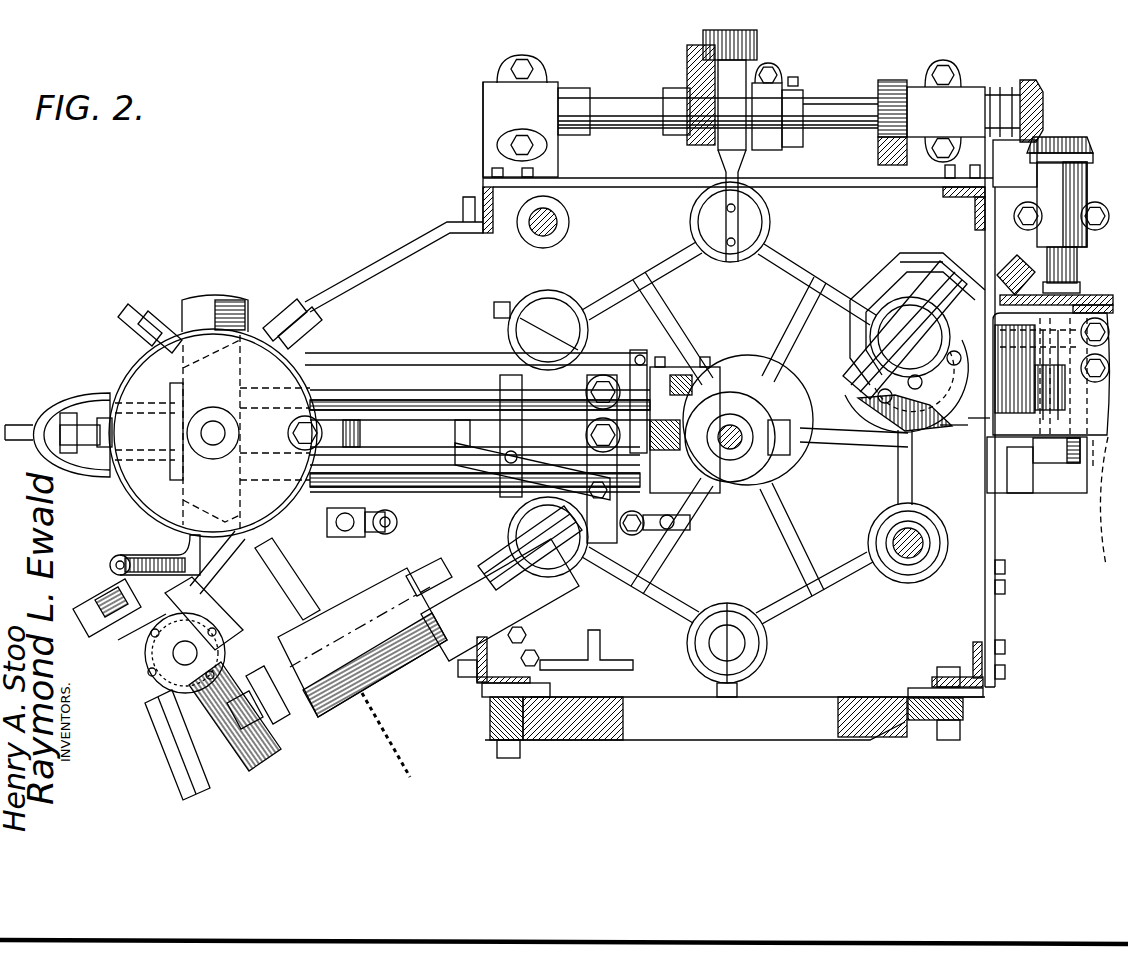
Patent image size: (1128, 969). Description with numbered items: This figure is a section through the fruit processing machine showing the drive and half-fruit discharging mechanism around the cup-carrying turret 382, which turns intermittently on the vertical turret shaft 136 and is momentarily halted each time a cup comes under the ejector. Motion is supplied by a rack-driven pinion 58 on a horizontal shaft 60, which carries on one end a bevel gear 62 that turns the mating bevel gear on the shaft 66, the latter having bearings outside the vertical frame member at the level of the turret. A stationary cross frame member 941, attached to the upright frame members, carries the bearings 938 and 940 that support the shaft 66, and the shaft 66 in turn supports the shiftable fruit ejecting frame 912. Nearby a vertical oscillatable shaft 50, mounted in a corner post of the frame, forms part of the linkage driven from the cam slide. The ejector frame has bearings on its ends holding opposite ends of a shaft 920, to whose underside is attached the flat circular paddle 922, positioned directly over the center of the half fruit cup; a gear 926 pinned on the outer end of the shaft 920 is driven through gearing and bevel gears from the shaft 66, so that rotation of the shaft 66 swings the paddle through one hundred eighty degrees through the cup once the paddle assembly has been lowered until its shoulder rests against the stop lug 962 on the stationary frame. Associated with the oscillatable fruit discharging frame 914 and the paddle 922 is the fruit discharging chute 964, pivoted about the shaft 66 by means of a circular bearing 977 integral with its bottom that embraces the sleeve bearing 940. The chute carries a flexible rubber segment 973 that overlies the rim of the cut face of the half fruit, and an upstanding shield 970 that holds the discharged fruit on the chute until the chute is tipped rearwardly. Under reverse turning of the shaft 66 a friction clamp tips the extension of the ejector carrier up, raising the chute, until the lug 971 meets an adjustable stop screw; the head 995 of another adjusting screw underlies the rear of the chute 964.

The vertical oscillatable shaft 50 is at (553, 222).
The pinion 58 is at (893, 84).
The horizontal shaft 60 is at (628, 105).
The bevel gear 62 is at (1040, 84).
The shaft 66 is at (1068, 266).
The turret shaft 136 is at (732, 430).
The cup-carrying turret 382 is at (826, 616).
The half fruit ejector 912 is at (876, 276).
The oscillatable fruit discharging frame 914 is at (908, 256).
The shaft 920 is at (945, 264).
The paddle 922 is at (900, 327).
The gear 926 is at (1017, 264).
The bearing 938 is at (1052, 200).
The bearing 940 is at (1040, 465).
The stationary cross frame member 941 is at (990, 616).
The stop lug 962 is at (930, 417).
The fruit discharging chute 964 is at (1103, 545).
The upstanding shield 970 is at (972, 422).
The lug 971 is at (1027, 375).
The flexible segment 973 is at (955, 430).
The circular bearing 977 is at (1082, 492).
The head 995 is at (1053, 365).